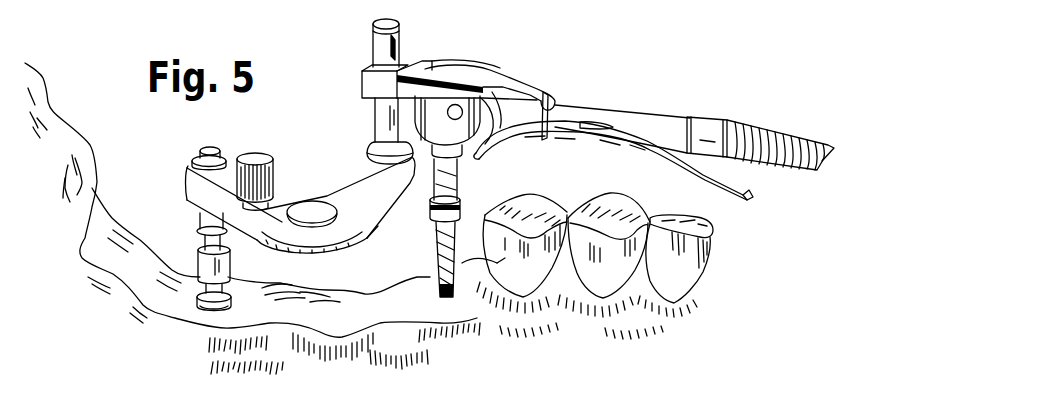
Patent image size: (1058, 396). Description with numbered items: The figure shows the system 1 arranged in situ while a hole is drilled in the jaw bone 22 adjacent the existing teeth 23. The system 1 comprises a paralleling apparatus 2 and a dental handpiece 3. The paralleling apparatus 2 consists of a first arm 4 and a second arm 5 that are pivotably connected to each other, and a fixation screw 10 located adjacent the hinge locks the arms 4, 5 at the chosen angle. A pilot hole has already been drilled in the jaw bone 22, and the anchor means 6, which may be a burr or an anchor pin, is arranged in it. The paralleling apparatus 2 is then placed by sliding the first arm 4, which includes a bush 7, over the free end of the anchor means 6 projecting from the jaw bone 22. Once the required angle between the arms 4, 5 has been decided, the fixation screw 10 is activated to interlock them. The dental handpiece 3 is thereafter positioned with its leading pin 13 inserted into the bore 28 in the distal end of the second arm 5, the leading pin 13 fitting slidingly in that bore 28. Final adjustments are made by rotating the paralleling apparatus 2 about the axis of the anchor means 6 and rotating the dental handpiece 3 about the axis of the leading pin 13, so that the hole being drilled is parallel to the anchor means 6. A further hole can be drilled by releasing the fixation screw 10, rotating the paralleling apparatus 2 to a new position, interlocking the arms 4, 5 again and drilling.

The system 1 is at (311, 126).
The paralleling apparatus 2 is at (323, 254).
The dental handpiece 3 is at (505, 62).
The first arm 4 is at (281, 196).
The second arm 5 is at (378, 218).
The anchor means 6 is at (207, 313).
The bush 7 is at (200, 215).
The fixation screw 10 is at (259, 154).
The leading pin 13 is at (400, 43).
The jaw bone 22 is at (160, 313).
The teeth 23 is at (542, 296).
The bore 28 is at (362, 157).